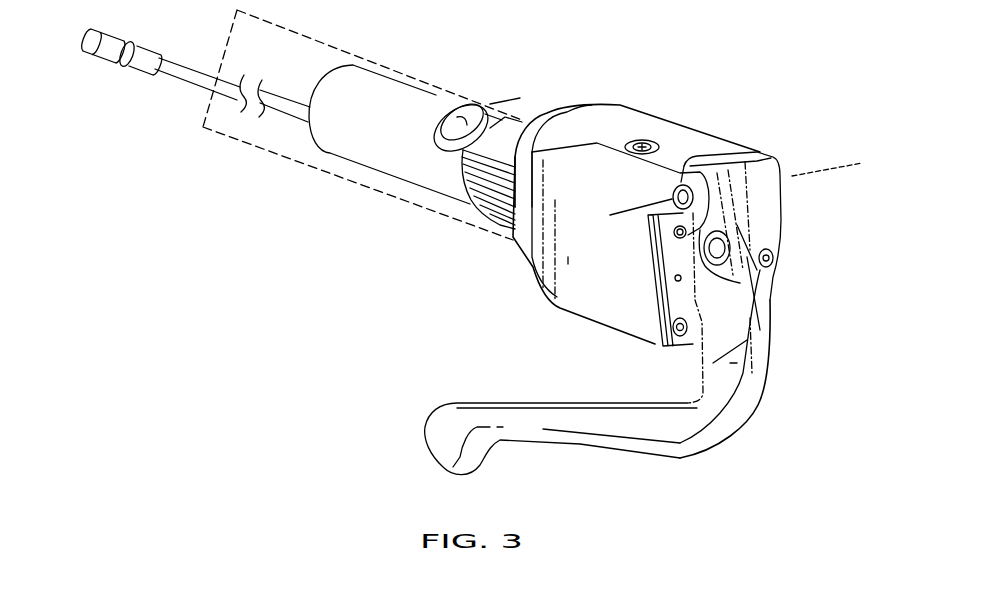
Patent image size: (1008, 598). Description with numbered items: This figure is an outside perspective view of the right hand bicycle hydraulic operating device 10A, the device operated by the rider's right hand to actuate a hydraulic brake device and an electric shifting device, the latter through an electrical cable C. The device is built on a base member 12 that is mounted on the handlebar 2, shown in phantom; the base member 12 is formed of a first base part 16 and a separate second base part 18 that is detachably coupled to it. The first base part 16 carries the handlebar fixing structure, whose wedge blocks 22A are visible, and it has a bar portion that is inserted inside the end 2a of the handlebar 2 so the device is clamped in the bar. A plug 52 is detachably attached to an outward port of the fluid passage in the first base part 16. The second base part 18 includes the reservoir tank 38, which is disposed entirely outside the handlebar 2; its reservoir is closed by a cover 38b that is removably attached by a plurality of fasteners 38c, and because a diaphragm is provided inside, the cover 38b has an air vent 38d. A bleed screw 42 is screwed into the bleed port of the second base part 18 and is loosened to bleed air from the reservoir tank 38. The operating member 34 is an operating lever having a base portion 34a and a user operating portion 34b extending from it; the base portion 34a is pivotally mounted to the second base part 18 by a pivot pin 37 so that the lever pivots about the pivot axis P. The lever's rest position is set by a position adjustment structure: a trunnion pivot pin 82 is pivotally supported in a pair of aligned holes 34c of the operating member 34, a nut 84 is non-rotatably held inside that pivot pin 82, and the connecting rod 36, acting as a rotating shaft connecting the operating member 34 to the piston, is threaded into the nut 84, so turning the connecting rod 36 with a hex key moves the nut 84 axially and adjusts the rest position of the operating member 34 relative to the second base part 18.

The bicycle hydraulic operating device 10A is at (741, 85).
The electrical cable C is at (186, 64).
The handlebar 2 is at (248, 147).
The end of the handlebar 2a is at (410, 204).
The base member 12 is at (487, 45).
The first base part 16 is at (441, 84).
The second base part 18 is at (611, 94).
The wedge blocks 22A is at (513, 112).
The plug 52 is at (440, 131).
The bleed screw 42 is at (646, 134).
The pivot pin 37 is at (672, 193).
The reservoir tank 38 is at (708, 305).
The cover 38b is at (666, 298).
The fasteners 38c is at (673, 234).
The air vent 38d is at (676, 278).
The operating member 34 is at (625, 452).
The base portion 34a is at (757, 185).
The user operating portion 34b is at (523, 401).
The aligned holes 34c is at (757, 290).
The connecting rod 36 is at (776, 265).
The pivot pin 82 is at (727, 248).
The nut 84 is at (717, 236).
The pivot axis P is at (837, 168).